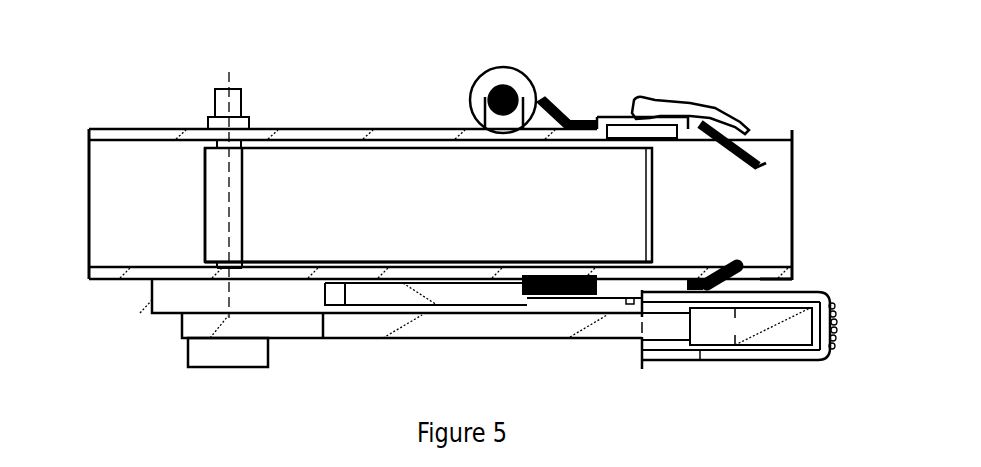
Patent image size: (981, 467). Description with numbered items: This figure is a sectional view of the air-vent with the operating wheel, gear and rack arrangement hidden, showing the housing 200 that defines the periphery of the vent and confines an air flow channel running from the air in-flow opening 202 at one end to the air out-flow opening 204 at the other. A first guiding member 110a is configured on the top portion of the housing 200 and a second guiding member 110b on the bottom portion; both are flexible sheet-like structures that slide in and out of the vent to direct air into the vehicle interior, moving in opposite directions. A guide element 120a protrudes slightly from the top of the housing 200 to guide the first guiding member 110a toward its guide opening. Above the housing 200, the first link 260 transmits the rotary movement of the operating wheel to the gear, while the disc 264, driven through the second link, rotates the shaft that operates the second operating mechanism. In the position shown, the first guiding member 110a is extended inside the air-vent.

The housing 200 is at (395, 128).
The air in-flow opening 202 is at (78, 208).
The air out-flow opening 204 is at (782, 215).
The first link 260 is at (545, 128).
The disc 264 is at (479, 76).
The guide element 120a is at (676, 103).
The first guiding member 110a is at (762, 149).
The second guiding member 110b is at (735, 265).